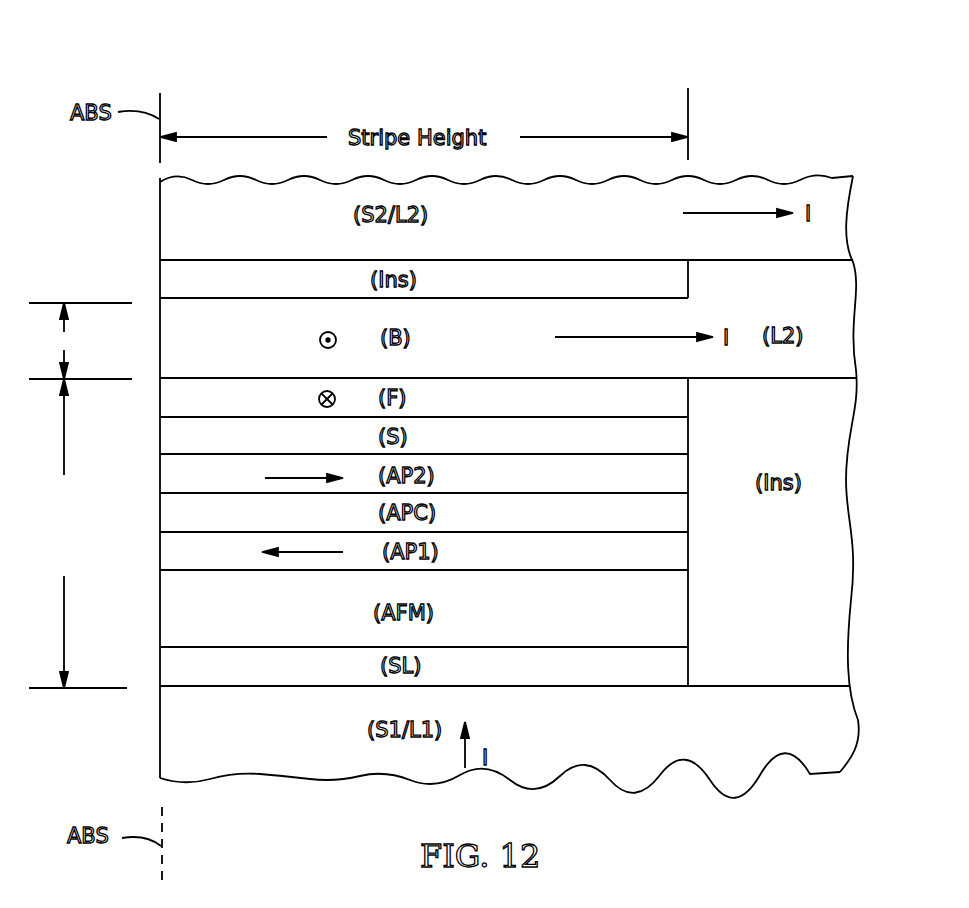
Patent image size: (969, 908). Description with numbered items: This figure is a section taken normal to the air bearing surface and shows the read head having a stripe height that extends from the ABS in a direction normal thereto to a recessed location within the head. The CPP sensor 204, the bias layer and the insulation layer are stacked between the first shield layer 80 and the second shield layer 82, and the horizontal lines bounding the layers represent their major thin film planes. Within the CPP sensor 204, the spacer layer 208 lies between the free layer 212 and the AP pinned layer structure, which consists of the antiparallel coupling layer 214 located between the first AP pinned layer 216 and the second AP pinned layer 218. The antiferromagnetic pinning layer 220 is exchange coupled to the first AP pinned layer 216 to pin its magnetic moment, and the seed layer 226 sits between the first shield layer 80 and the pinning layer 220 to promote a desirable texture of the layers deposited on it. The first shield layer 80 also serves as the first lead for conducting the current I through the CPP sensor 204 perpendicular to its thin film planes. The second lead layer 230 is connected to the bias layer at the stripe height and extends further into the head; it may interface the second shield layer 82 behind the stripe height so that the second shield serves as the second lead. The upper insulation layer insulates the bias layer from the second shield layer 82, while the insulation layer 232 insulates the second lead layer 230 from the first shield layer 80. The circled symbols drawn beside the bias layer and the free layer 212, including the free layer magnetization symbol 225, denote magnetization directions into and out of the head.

The second shield layer 82 is at (535, 227).
The second lead layer 230 is at (803, 293).
The magnetization direction of free layer 225 is at (319, 397).
The free layer 212 is at (540, 410).
The spacer layer 208 is at (541, 449).
The second AP pinned layer 218 is at (541, 487).
The antiparallel coupling layer 214 is at (541, 523).
The first AP pinned layer 216 is at (541, 562).
The antiferromagnetic pinning layer 220 is at (541, 624).
The seed layer 226 is at (542, 674).
The insulation layer 232 is at (797, 540).
The first shield layer 80 is at (537, 743).
The CPP sensor 204 is at (358, 533).